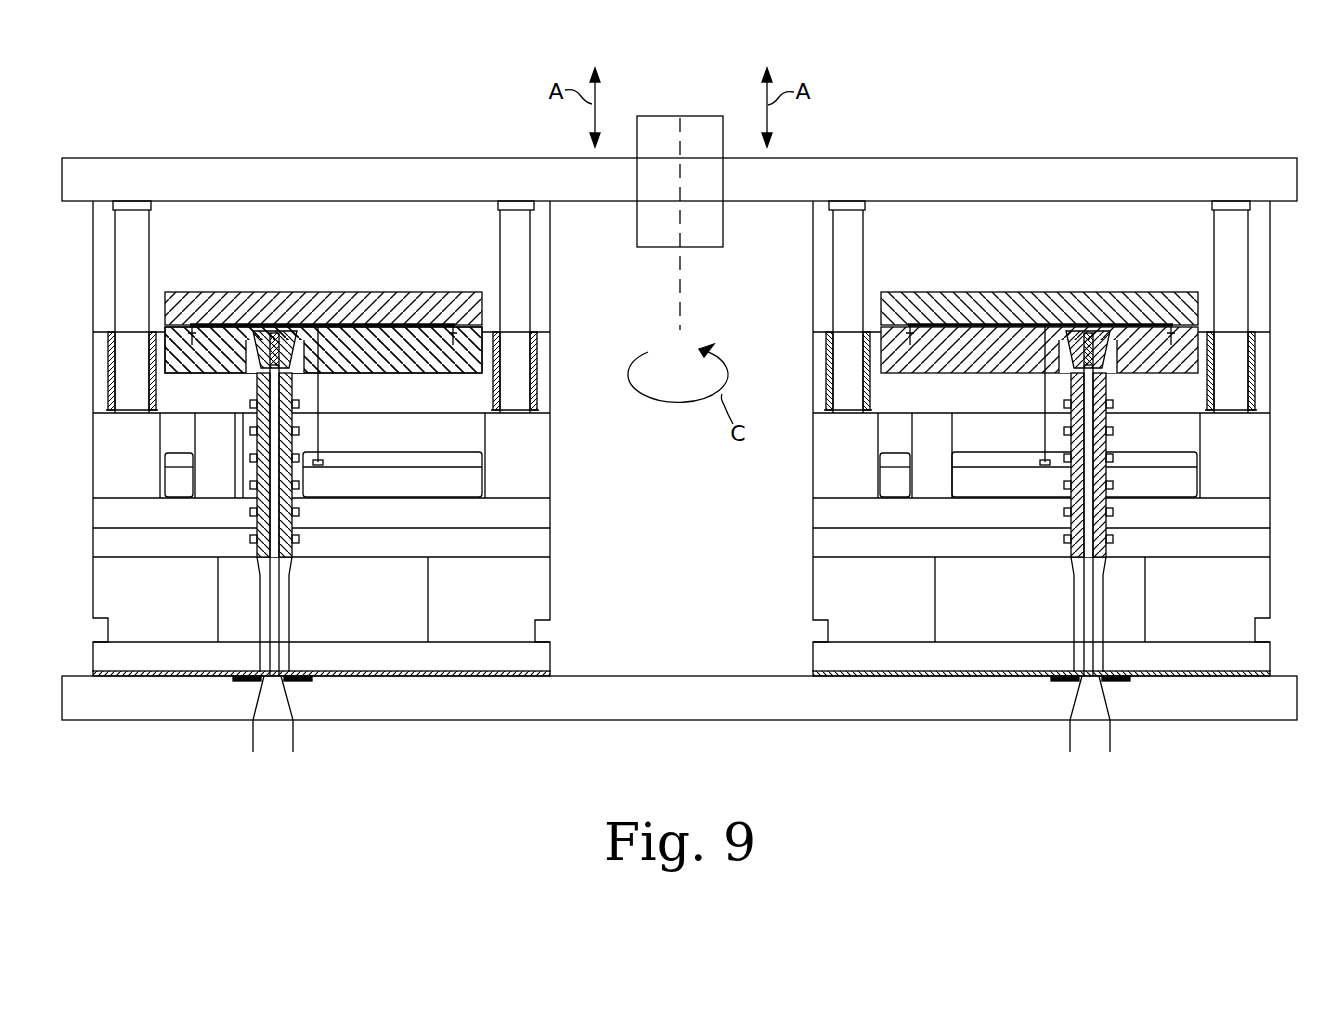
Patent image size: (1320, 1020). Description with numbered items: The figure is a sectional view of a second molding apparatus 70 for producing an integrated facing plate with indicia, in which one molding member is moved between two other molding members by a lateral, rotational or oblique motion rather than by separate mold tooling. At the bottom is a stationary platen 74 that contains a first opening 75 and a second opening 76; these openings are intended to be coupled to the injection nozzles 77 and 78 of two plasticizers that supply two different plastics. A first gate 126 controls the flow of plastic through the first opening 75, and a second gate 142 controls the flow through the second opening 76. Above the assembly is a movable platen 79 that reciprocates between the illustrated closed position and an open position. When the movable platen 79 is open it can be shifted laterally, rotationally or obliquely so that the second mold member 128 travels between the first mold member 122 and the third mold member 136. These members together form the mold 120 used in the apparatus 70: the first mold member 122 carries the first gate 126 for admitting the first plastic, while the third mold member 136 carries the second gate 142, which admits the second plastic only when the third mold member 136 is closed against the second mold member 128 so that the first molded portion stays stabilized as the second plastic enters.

The second molding apparatus 70 is at (936, 106).
The stationary platen 74 is at (490, 708).
The first opening 75 is at (283, 662).
The second opening 76 is at (1094, 662).
The injection nozzle 77 is at (259, 728).
The injection nozzle 78 is at (1080, 728).
The movable platen 79 is at (1088, 158).
The mold 120 is at (390, 280).
The first mold member 122 is at (422, 373).
The first gate 126 is at (256, 348).
The second mold member 128 is at (385, 292).
The third mold member 136 is at (982, 373).
The second gate 142 is at (1108, 348).